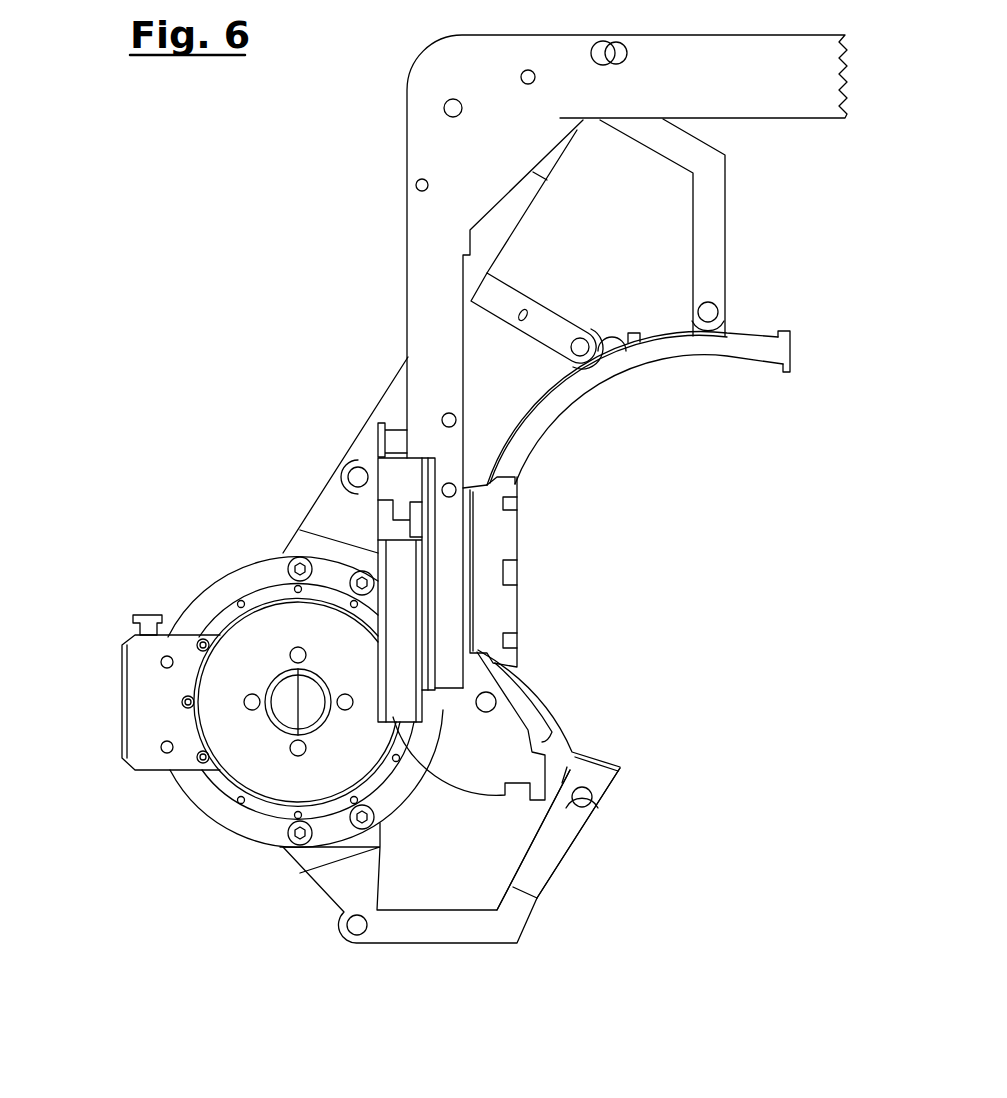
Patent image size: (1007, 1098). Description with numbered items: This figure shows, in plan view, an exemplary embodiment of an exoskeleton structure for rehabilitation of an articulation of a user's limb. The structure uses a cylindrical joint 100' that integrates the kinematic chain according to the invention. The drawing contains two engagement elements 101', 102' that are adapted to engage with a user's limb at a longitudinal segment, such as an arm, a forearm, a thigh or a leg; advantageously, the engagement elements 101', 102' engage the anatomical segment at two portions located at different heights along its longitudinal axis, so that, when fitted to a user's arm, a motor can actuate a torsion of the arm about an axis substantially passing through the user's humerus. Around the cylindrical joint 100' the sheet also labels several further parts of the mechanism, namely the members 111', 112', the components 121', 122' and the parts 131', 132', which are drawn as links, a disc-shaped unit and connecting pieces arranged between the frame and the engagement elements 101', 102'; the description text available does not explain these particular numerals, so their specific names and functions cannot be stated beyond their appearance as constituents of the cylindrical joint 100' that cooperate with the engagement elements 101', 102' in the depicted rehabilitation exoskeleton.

The cylindrical joint 100' is at (448, 489).
The engagement element 101' is at (598, 708).
The engagement element 102' is at (638, 420).
The first link 111' is at (605, 847).
The second link 112' is at (734, 227).
The drive unit 121' is at (240, 671).
The slider carriage 122' is at (335, 466).
The coupling link 131' is at (554, 297).
The coupling plate 132' is at (511, 688).